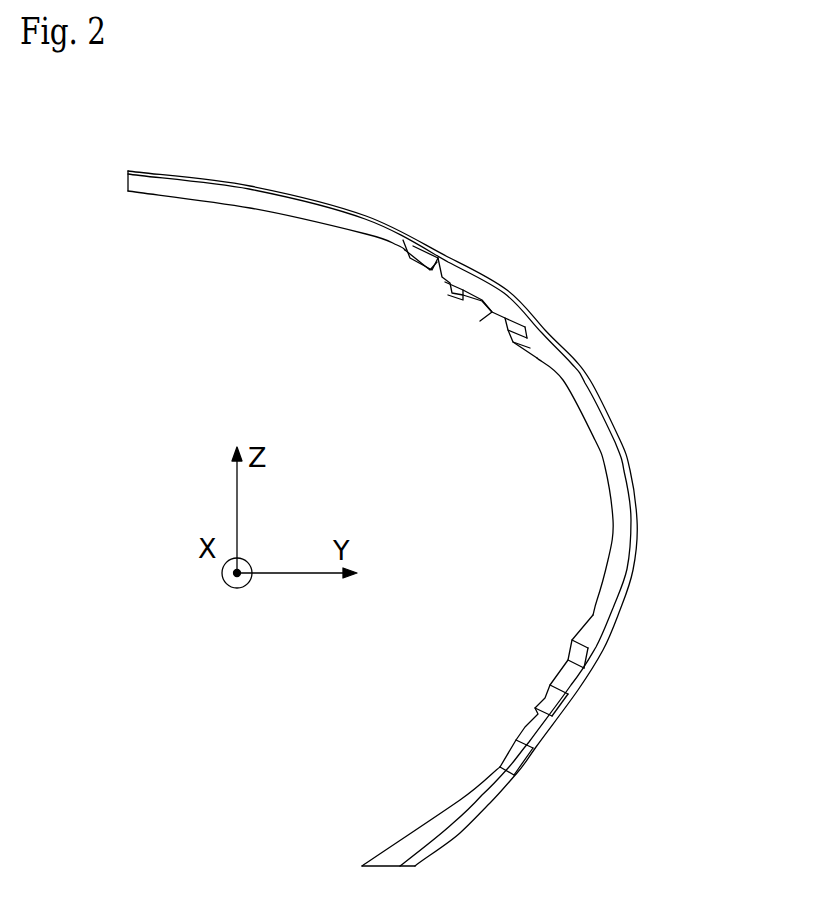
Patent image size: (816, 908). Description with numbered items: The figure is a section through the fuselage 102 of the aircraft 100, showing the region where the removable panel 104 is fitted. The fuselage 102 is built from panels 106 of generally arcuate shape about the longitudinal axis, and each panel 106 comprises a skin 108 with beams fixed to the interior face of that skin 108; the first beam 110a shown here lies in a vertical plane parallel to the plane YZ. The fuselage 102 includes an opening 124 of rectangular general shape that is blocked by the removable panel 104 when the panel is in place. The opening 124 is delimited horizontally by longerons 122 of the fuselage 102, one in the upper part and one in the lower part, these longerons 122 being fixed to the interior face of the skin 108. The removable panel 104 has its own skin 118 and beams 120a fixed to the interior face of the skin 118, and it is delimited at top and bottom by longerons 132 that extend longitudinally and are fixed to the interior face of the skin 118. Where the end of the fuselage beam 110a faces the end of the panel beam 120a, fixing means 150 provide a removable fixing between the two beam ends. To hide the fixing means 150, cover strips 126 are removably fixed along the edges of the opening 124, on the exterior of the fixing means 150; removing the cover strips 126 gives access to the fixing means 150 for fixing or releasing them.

The aircraft 100 is at (91, 318).
The fuselage 102 is at (291, 723).
The removable panel 104 is at (658, 658).
The panel 106 is at (336, 167).
The skin 108 is at (170, 171).
The first beam 110a is at (177, 181).
The skin 118 is at (613, 418).
The beam 120a is at (612, 452).
The longeron 122 is at (438, 268).
The opening 124 is at (447, 265).
The cover strip 126 is at (472, 268).
The longeron 132 is at (492, 305).
The fixing means 150 is at (495, 691).